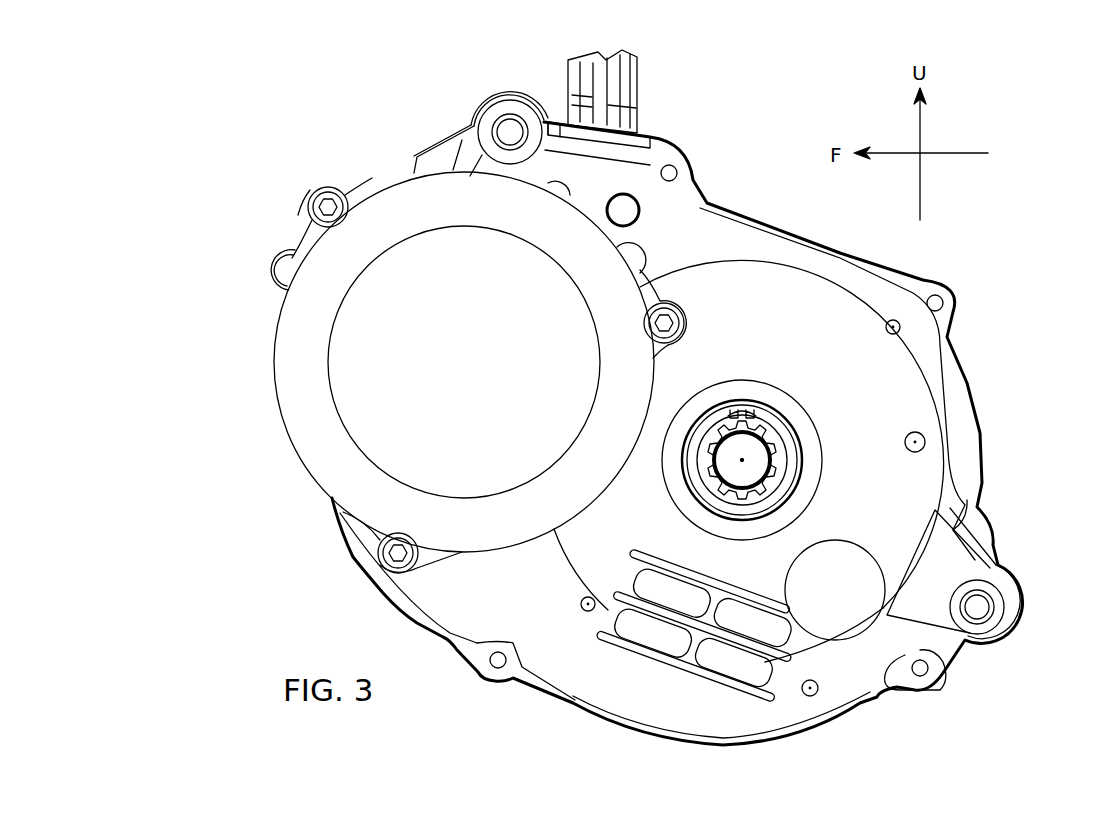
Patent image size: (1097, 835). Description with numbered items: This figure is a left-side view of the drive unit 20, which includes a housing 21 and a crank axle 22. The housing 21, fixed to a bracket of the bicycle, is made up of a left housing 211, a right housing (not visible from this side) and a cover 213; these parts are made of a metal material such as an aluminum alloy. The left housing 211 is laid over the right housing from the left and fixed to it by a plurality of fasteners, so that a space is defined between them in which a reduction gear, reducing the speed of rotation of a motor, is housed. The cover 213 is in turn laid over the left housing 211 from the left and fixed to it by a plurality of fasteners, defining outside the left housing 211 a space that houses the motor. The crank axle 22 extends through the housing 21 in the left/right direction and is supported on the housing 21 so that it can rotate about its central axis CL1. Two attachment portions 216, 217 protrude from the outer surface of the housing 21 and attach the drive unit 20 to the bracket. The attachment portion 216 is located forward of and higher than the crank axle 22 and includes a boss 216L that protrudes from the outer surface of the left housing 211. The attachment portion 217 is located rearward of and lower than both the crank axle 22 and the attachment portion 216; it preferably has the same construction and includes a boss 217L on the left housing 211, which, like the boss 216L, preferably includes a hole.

The drive unit 20 is at (376, 180).
The housing 21 is at (966, 383).
The left housing 211 is at (777, 245).
The cover 213 is at (372, 360).
The attachment portion 216 is at (512, 96).
The boss 216L is at (490, 110).
The attachment portion 217 is at (1005, 571).
The boss 217L is at (1002, 630).
The crank axle 22 is at (742, 460).
The central axis CL1 is at (743, 460).